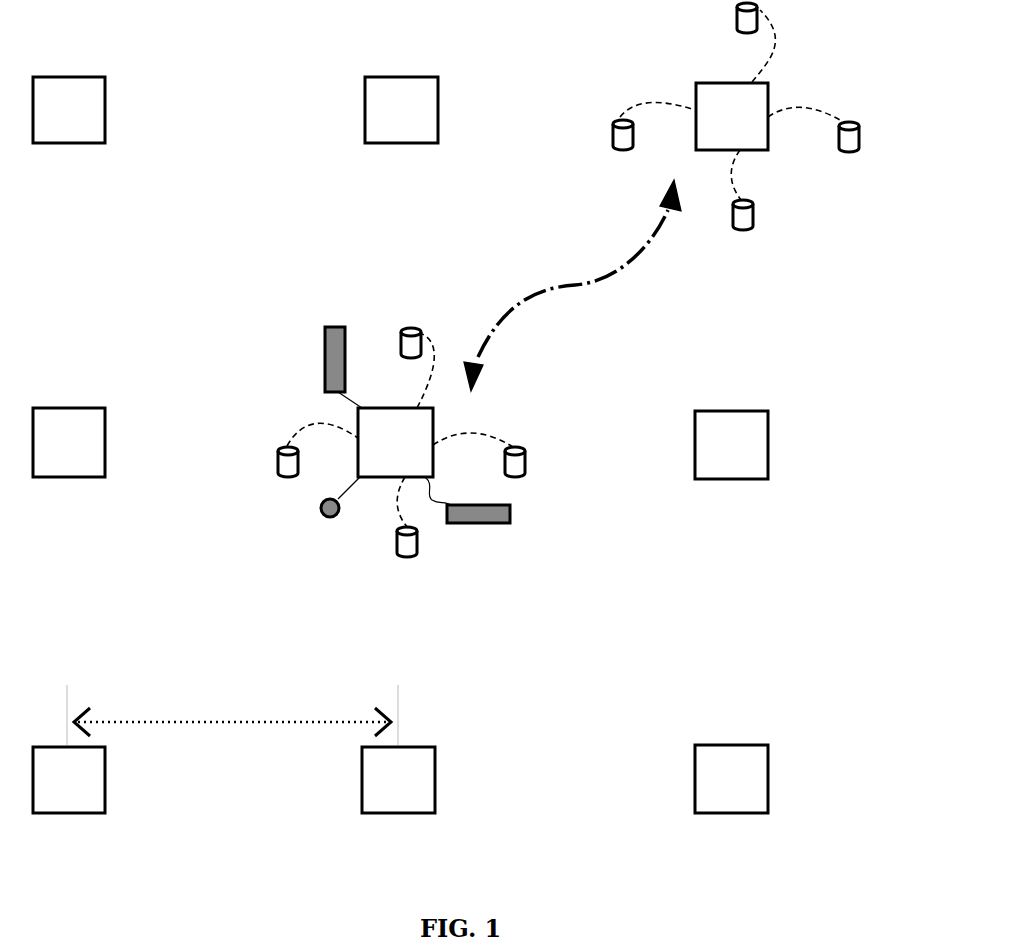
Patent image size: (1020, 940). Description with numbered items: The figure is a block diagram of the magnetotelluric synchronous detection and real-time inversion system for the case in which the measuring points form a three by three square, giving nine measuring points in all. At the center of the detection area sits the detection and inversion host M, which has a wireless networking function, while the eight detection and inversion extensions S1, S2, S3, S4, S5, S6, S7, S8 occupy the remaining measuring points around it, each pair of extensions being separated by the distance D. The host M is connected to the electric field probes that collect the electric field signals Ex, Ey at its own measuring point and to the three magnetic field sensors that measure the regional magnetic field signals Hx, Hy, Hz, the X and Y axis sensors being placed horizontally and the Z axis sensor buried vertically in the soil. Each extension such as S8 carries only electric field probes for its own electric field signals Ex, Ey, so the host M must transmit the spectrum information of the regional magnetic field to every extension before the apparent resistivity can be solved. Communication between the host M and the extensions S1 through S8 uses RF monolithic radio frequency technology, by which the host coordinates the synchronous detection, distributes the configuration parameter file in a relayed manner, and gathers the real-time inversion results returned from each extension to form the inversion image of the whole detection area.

The detection and inversion extension No. 1 S1 is at (69, 780).
The detection and inversion extension No. 2 S2 is at (398, 780).
The detection and inversion extension No. 3 S3 is at (731, 779).
The detection and inversion extension No. 4 S4 is at (69, 442).
The detection and inversion extension No. 5 S5 is at (731, 445).
The detection and inversion extension No. 6 S6 is at (69, 110).
The detection and inversion extension No. 7 S7 is at (401, 110).
The detection and inversion extension No. 8 S8 is at (729, 120).
The detection and inversion host M is at (395, 445).
The electric field signal Ex is at (564, 182).
The electric field signal Ey is at (697, 299).
The magnetic field signal Hx is at (327, 367).
The magnetic field signal Hy is at (467, 512).
The magnetic field signal Hz is at (338, 512).
The RF monolithic radio frequency communication RF is at (572, 285).
The distance between detection and inversion extensions D is at (232, 715).